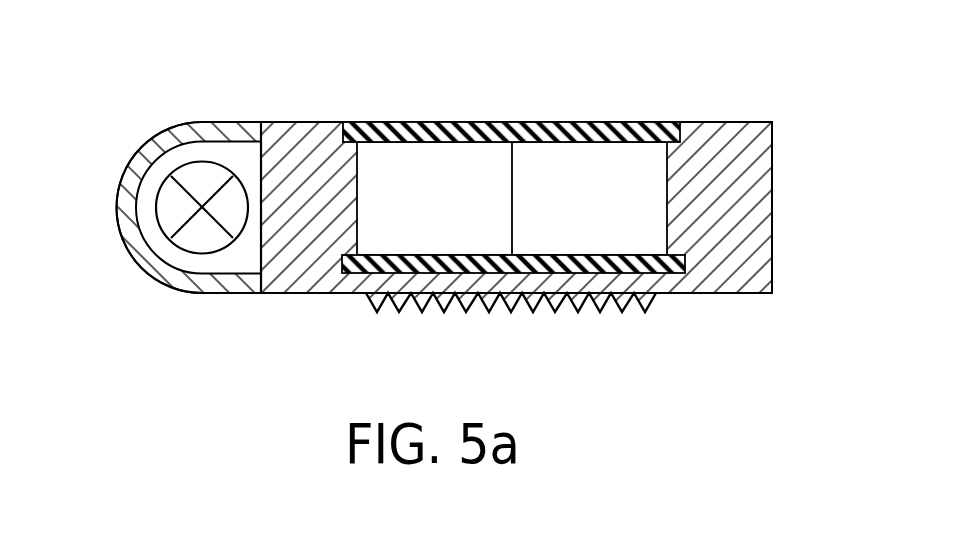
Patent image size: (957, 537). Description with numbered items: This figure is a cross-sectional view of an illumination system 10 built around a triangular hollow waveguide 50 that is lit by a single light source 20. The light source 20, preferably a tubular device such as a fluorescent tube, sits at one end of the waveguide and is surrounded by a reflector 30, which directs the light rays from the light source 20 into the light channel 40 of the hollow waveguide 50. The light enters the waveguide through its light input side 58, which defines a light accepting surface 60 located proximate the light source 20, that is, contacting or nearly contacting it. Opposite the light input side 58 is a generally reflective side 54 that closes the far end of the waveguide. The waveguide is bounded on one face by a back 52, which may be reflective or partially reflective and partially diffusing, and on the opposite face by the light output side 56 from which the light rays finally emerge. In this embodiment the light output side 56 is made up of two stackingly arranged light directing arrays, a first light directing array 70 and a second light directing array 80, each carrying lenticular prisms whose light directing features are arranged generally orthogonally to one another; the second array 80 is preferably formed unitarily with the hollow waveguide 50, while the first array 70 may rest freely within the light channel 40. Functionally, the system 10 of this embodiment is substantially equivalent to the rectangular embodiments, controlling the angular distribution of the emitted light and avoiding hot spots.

The illumination system 10 is at (124, 48).
The light source 20 is at (190, 242).
The reflector 30 is at (127, 205).
The light channel 40 is at (490, 215).
The hollow waveguide 50 is at (488, 193).
The back 52 is at (560, 122).
The reflective side 54 is at (772, 168).
The light output side 56 is at (558, 290).
The light input side 58 is at (300, 143).
The light accepting surface 60 is at (257, 247).
The first light directing array 70 is at (407, 267).
The second light directing array 80 is at (425, 273).